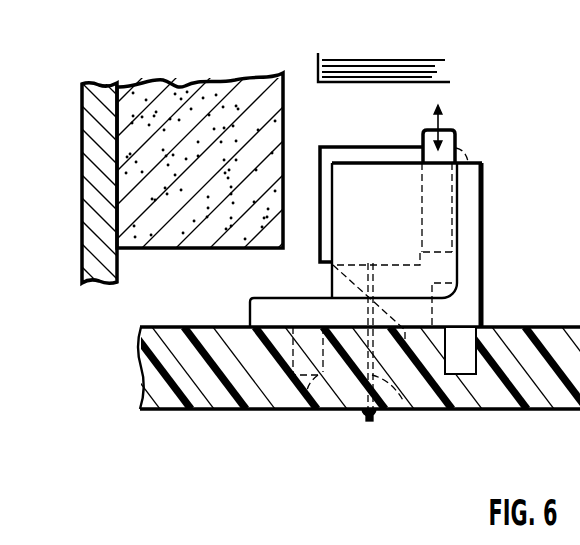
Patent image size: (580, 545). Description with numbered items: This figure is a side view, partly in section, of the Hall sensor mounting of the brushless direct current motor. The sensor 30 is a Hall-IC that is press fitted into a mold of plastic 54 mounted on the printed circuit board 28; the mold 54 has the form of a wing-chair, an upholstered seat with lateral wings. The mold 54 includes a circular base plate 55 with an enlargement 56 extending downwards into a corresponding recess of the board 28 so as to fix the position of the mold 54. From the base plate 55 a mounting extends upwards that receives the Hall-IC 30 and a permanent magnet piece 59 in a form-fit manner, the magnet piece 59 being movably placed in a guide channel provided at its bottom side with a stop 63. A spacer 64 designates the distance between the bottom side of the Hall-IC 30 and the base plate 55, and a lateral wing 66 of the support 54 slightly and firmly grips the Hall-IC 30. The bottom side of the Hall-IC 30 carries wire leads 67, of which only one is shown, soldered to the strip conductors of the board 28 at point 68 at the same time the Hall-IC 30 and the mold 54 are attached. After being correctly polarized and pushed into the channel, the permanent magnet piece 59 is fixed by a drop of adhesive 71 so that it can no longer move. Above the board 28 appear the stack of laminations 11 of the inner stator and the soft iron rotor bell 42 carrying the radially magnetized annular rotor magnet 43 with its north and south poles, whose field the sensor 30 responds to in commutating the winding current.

The stack of laminations 11 is at (384, 52).
The printed circuit board 28 is at (339, 398).
The sensor 30 is at (371, 178).
The rotor bell 42 is at (70, 181).
The rotor magnet 43 is at (224, 139).
The mold of plastic 54 is at (432, 245).
The base plate 55 is at (325, 245).
The enlargement 56 is at (392, 402).
The permanent magnet piece 59 is at (468, 135).
The stop 63 is at (482, 285).
The spacer 64 is at (344, 308).
The lateral wing 66 is at (370, 196).
The wire leads 67 is at (398, 426).
The soldering point 68 is at (363, 378).
The drop of adhesive 71 is at (432, 199).